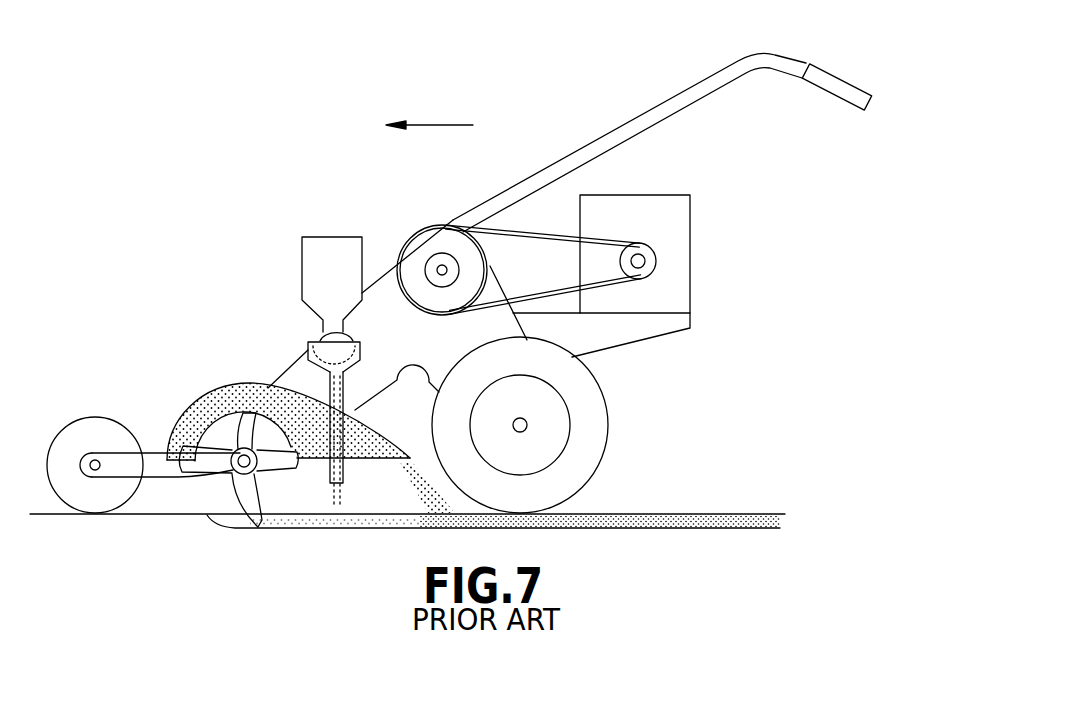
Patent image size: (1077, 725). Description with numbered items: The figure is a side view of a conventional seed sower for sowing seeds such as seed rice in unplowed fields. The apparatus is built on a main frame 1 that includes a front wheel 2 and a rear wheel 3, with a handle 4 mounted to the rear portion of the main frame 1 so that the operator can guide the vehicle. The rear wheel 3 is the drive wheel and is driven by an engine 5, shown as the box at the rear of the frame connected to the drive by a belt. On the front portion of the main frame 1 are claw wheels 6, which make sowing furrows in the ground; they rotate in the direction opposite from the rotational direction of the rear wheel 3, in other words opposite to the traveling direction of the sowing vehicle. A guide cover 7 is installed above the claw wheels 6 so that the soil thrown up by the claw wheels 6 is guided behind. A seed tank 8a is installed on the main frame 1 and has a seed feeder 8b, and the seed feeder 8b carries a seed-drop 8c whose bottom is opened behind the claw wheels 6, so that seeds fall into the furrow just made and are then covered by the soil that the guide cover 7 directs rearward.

The main frame 1 is at (395, 310).
The front wheel 2 is at (85, 425).
The rear wheel 3 is at (598, 420).
The handle 4 is at (747, 57).
The engine 5 is at (677, 237).
The claw wheels 6 is at (207, 497).
The guide cover 7 is at (192, 400).
The seed tank 8a is at (300, 268).
The seed feeder 8b is at (305, 348).
The seed-drop 8c is at (330, 485).